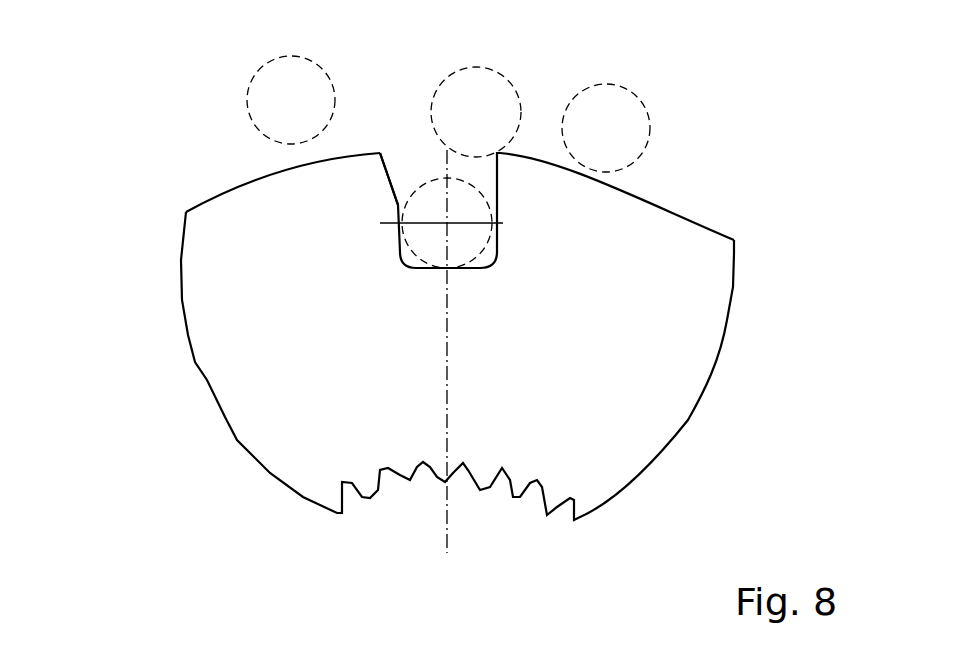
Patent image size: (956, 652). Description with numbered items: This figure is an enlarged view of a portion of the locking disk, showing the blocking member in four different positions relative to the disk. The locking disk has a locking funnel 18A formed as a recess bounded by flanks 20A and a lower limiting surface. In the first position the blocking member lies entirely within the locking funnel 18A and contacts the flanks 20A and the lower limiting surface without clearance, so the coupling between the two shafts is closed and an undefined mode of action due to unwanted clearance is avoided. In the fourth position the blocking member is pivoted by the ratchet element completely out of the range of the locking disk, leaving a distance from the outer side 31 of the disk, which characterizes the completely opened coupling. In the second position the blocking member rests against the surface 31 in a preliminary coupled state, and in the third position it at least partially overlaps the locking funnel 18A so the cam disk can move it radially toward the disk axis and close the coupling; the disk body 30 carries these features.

The locking funnel 18A is at (405, 150).
The flanks 20A is at (390, 182).
The rotor body 30 is at (432, 272).
The outer side of locking disk 31 is at (235, 191).